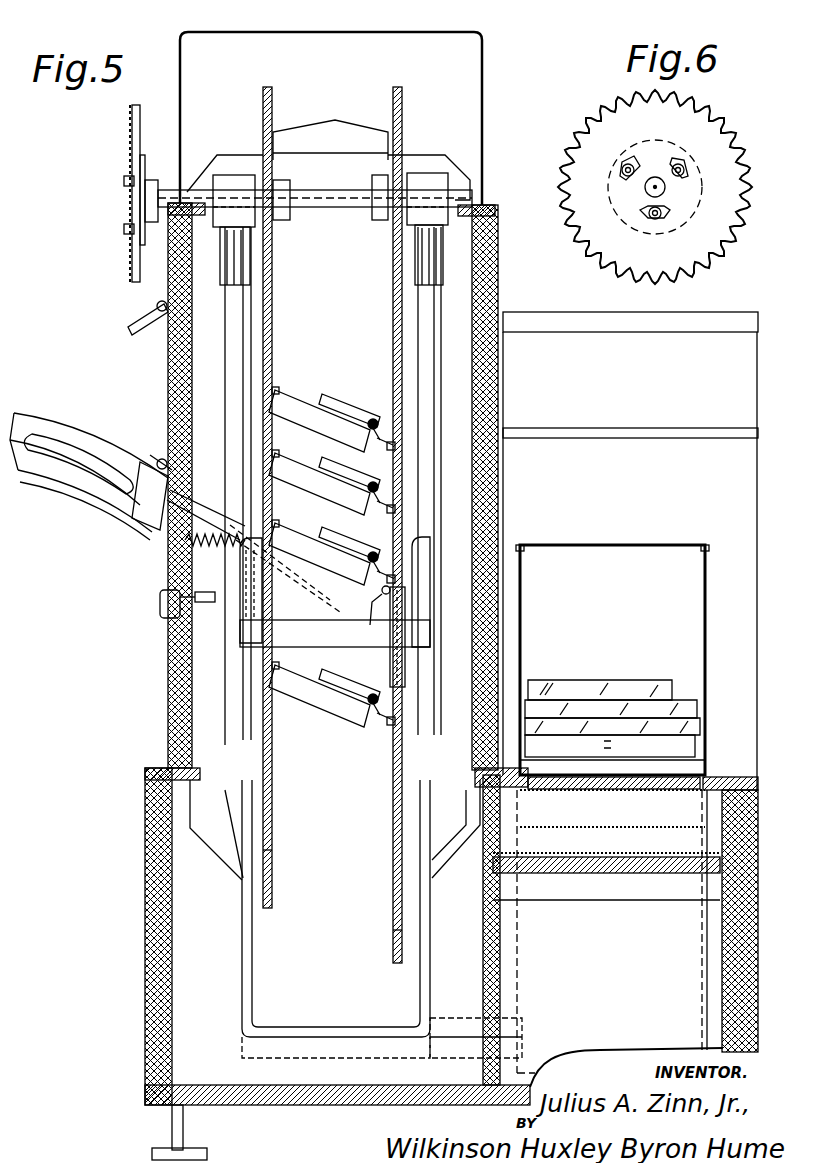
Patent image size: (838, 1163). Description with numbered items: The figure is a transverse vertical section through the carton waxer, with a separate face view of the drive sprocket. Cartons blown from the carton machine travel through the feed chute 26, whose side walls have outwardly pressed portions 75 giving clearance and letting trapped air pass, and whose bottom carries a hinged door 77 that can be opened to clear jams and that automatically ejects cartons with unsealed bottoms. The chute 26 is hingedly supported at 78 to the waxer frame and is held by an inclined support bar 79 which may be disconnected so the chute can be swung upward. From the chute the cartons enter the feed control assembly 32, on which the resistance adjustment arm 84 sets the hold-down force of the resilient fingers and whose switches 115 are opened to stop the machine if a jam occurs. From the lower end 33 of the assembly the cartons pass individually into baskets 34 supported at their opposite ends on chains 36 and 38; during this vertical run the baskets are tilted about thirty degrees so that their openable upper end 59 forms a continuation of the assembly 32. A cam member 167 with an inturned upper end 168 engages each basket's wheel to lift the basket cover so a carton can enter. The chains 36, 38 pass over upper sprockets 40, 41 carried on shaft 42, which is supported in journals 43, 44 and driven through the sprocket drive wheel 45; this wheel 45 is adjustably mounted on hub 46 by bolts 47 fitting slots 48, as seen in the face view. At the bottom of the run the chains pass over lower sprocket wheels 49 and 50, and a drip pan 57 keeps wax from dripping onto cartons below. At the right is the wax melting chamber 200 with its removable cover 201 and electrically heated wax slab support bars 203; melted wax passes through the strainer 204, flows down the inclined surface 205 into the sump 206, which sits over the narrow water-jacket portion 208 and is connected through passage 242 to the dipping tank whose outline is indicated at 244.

In FIG. 5, the feed chute 26 is at (40, 421).
In FIG. 5, the feed control assembly 32 is at (282, 578).
In FIG. 5, the lower end of feed control assembly 33 is at (262, 592).
In FIG. 5, the baskets 34 is at (348, 656).
In FIG. 5, the chain 36 is at (272, 274).
In FIG. 5, the chain 38 is at (393, 291).
In FIG. 5, the upper sprocket 40 is at (403, 113).
In FIG. 5, the upper sprocket 41 is at (272, 110).
In FIG. 5, the shaft 42 is at (331, 209).
In FIG. 5, the journal 43 is at (430, 180).
In FIG. 5, the journal 44 is at (235, 178).
In FIG. 5, the sprocket drive wheel 45 is at (133, 250).
In FIG. 6, the sprocket drive wheel 45 is at (718, 249).
In FIG. 5, the hub 46 is at (148, 176).
In FIG. 5, the bolts 47 is at (124, 184).
In FIG. 6, the bolts 47 is at (676, 164).
In FIG. 6, the slots 48 is at (668, 180).
In FIG. 5, the lower sprocket wheel 49 is at (275, 899).
In FIG. 5, the lower sprocket wheel 50 is at (395, 898).
In FIG. 5, the drip pan 57 is at (185, 977).
In FIG. 5, the openable upper end of basket 59 is at (282, 580).
In FIG. 5, the outwardly pressed portions 75 is at (70, 447).
In FIG. 5, the hinged door 77 is at (55, 488).
In FIG. 5, the hinge support 78 is at (158, 460).
In FIG. 5, the inclined support bar 79 is at (147, 325).
In FIG. 5, the resistance adjustment arm 84 is at (200, 522).
In FIG. 5, the switches 115 is at (160, 604).
In FIG. 5, the cam member 167 is at (398, 600).
In FIG. 5, the inturned upper end 168 is at (390, 586).
In FIG. 5, the wax melting chamber 200 is at (636, 627).
In FIG. 5, the removable cover 201 is at (612, 545).
In FIG. 5, the wax slab support bars 203 is at (680, 742).
In FIG. 5, the strainer 204 is at (674, 779).
In FIG. 5, the inclined surface 205 is at (619, 852).
In FIG. 5, the sump 206 is at (524, 950).
In FIG. 5, the narrow portion of water jacket 208 is at (623, 843).
In FIG. 5, the passage 242 is at (482, 1040).
In FIG. 5, the waxing tank outline 244 is at (315, 1047).